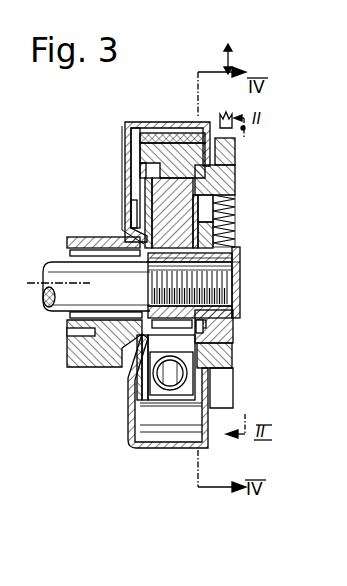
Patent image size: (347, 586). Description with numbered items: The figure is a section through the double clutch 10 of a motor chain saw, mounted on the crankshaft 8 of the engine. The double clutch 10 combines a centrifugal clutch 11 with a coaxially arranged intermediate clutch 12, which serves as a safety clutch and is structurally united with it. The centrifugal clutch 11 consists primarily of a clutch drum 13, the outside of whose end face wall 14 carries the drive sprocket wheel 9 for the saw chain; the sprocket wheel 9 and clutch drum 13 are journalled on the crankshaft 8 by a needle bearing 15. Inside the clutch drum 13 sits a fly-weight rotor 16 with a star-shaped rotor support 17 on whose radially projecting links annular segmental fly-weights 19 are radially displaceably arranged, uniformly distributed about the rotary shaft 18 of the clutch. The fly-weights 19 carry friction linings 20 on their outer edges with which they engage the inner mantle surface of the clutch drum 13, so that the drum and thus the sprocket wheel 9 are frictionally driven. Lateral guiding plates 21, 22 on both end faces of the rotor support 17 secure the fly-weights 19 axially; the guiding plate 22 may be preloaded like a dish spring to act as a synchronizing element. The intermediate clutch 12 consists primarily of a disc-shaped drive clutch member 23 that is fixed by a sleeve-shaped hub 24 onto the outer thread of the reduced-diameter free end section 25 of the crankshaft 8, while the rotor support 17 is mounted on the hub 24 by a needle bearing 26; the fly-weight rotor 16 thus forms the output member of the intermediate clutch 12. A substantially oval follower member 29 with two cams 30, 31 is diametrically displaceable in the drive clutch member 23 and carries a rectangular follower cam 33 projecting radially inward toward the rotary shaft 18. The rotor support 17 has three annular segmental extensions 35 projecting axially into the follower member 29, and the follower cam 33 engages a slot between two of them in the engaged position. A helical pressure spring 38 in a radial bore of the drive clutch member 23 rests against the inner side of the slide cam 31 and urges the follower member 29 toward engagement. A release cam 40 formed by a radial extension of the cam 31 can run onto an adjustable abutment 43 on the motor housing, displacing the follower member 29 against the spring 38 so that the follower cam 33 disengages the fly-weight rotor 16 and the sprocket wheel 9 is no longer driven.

The crankshaft 8 is at (60, 268).
The drive sprocket wheel 9 is at (87, 364).
The double clutch 10 is at (178, 95).
The centrifugal clutch 11 is at (123, 122).
The intermediate clutch 12 is at (245, 152).
The clutch drum 13 is at (131, 133).
The end face wall 14 is at (146, 190).
The needle bearing 15 is at (71, 284).
The fly-weight rotor 16 is at (137, 172).
The rotor support 17 is at (128, 212).
The rotary shaft 18 is at (40, 284).
The fly-weights 19 is at (143, 150).
The friction linings 20 is at (166, 140).
The lateral guiding plate 21 is at (132, 236).
The lateral guiding plate 22 is at (193, 400).
The drive clutch member 23 is at (238, 333).
The sleeve-shaped hub 24 is at (158, 271).
The free end section 25 is at (241, 276).
The needle bearing 26 is at (234, 257).
The follower member 29 is at (236, 374).
The cam 30 is at (234, 360).
The cam 31 is at (236, 183).
The follower cam 33 is at (234, 342).
The extensions 35 is at (237, 218).
The helical pressure spring 38 is at (240, 250).
The release cam 40 is at (243, 128).
The abutment 43 is at (232, 112).